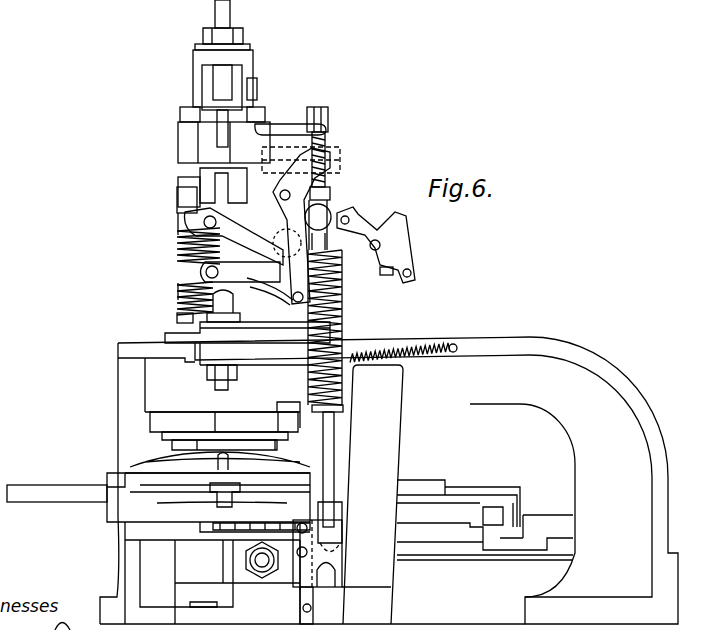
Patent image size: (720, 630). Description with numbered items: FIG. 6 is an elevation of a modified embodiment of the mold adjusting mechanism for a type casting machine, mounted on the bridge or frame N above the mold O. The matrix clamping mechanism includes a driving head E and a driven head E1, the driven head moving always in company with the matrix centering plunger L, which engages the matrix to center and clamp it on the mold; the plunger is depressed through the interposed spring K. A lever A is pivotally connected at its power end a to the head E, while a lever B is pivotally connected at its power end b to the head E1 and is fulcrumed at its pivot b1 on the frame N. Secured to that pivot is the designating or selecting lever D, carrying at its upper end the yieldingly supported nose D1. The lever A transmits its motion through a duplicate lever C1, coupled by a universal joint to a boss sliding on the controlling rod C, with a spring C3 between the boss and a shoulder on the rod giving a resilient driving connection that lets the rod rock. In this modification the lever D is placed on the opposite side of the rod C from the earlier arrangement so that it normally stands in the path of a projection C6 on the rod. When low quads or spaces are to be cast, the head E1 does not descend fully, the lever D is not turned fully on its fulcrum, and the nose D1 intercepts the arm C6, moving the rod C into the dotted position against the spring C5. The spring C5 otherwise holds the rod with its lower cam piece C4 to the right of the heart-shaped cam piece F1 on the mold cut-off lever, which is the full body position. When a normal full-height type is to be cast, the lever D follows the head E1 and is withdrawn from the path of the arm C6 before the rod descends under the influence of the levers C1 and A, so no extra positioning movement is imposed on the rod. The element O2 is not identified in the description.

The lever A is at (205, 201).
The projection on the rod C C6 is at (280, 127).
The controlling member C is at (330, 141).
The projecting piece or nose D1 is at (328, 163).
The designating or selecting member D is at (333, 206).
The fulcrum pivot of lever B b1 is at (298, 302).
The driving member E is at (192, 223).
The power end of lever A a is at (188, 231).
The spring K is at (190, 247).
The driven member E1 is at (200, 271).
The lever B is at (266, 296).
The power end of lever B b is at (185, 287).
The matrix centering plunger L is at (190, 305).
The lever C1 is at (397, 233).
The spring C3 is at (314, 392).
The bridge or frame N is at (389, 480).
The spring C5 is at (418, 360).
The cam piece C4 is at (331, 515).
The heart-shaped cam piece F1 is at (332, 566).
The mold O is at (200, 568).
The housing wall O2 is at (300, 571).